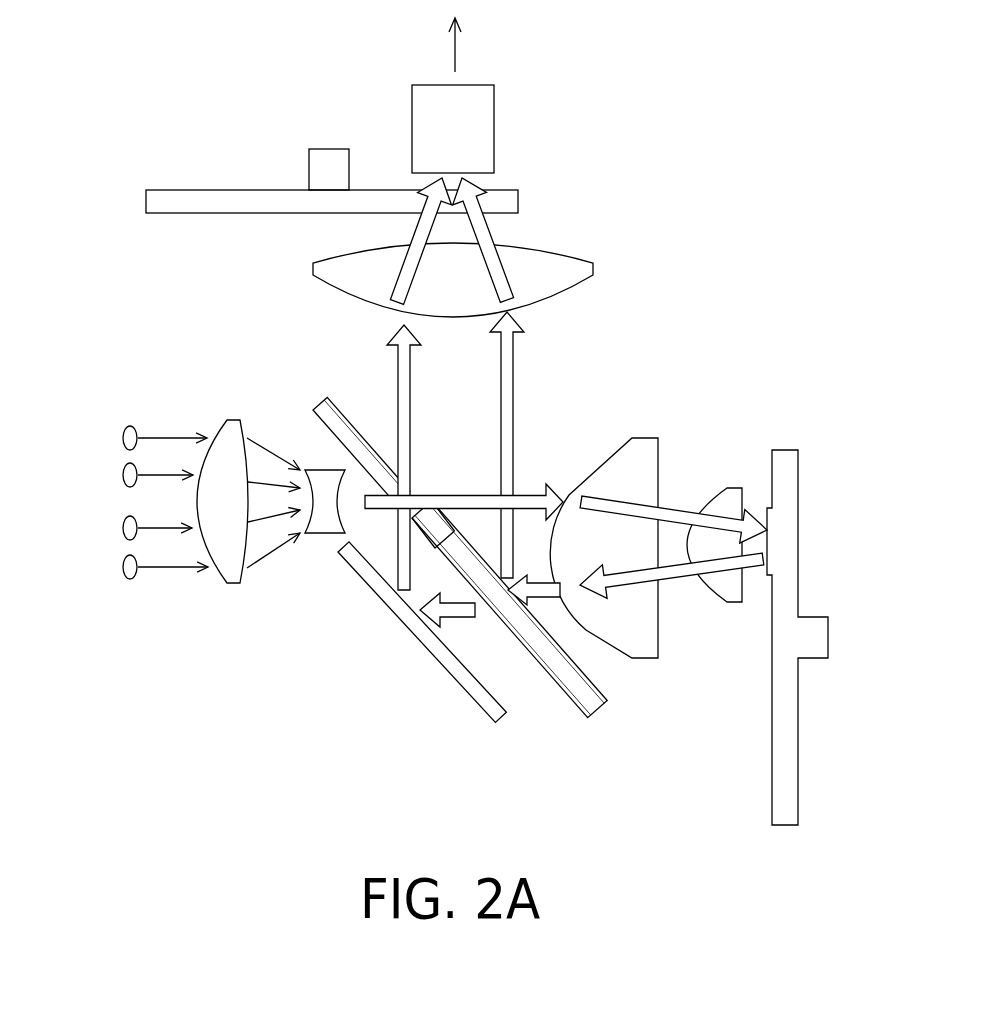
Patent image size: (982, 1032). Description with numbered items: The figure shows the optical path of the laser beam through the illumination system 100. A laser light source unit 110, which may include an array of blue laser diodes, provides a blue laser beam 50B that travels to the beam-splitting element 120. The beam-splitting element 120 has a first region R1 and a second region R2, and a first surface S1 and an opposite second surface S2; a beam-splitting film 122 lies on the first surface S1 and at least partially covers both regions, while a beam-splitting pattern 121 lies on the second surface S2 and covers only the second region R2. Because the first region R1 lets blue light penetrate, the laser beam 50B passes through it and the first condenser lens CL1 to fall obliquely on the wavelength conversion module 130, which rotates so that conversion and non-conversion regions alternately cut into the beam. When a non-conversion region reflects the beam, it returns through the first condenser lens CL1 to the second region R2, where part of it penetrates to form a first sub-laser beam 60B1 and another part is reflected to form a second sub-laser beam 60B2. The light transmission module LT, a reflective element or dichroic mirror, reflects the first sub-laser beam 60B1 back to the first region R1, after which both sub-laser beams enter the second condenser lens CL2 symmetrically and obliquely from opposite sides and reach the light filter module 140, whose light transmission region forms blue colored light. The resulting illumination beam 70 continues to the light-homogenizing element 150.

The illumination beam 70 is at (455, 52).
The light-homogenizing element 150 is at (487, 125).
The light filter module 140 is at (205, 205).
The second condenser lens CL2 is at (567, 272).
The beam-splitting element 120 is at (370, 422).
The first region R1 is at (358, 452).
The beam-splitting pattern 121 is at (536, 651).
The beam-splitting film 122 is at (432, 510).
The second region R2 is at (595, 705).
The first surface S1 is at (589, 661).
The second surface S2 is at (551, 682).
The light transmission module LT is at (490, 710).
The first condenser lens CL1 is at (648, 450).
The wavelength conversion module 130 is at (790, 753).
The first sub-laser beam 60B1 is at (407, 383).
The second sub-laser beam 60B2 is at (510, 398).
The laser beam 50B is at (175, 438).
The laser light source unit 110 is at (124, 567).
The illumination system 100 is at (687, 837).